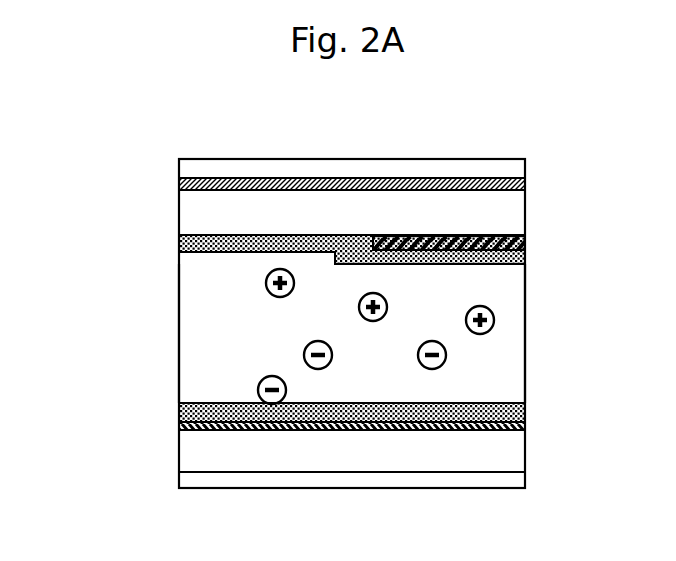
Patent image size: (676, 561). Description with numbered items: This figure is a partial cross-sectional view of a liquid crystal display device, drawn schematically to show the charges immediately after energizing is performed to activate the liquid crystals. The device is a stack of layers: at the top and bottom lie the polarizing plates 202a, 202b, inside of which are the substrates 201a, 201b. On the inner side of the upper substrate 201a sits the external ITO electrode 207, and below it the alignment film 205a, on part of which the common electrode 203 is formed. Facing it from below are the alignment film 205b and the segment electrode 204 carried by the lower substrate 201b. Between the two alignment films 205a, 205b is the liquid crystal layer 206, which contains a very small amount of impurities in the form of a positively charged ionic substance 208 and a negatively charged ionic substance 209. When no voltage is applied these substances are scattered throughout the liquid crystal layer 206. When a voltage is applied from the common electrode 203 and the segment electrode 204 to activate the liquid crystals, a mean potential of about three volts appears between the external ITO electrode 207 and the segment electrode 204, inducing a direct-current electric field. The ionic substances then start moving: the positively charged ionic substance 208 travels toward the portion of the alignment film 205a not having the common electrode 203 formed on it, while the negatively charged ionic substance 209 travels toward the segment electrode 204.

The polarizing plate 202a is at (520, 170).
The external ITO electrode 207 is at (180, 183).
The substrate 201a is at (520, 211).
The common electrode 203 is at (522, 242).
The alignment film 205a is at (522, 257).
The liquid crystal layer 206 is at (520, 351).
The positively charged ionic substance 208 is at (266, 283).
The negatively charged ionic substance 209 is at (258, 393).
The alignment film 205b is at (520, 413).
The segment electrode 204 is at (180, 427).
The substrate 201b is at (520, 456).
The polarizing plate 202b is at (520, 486).